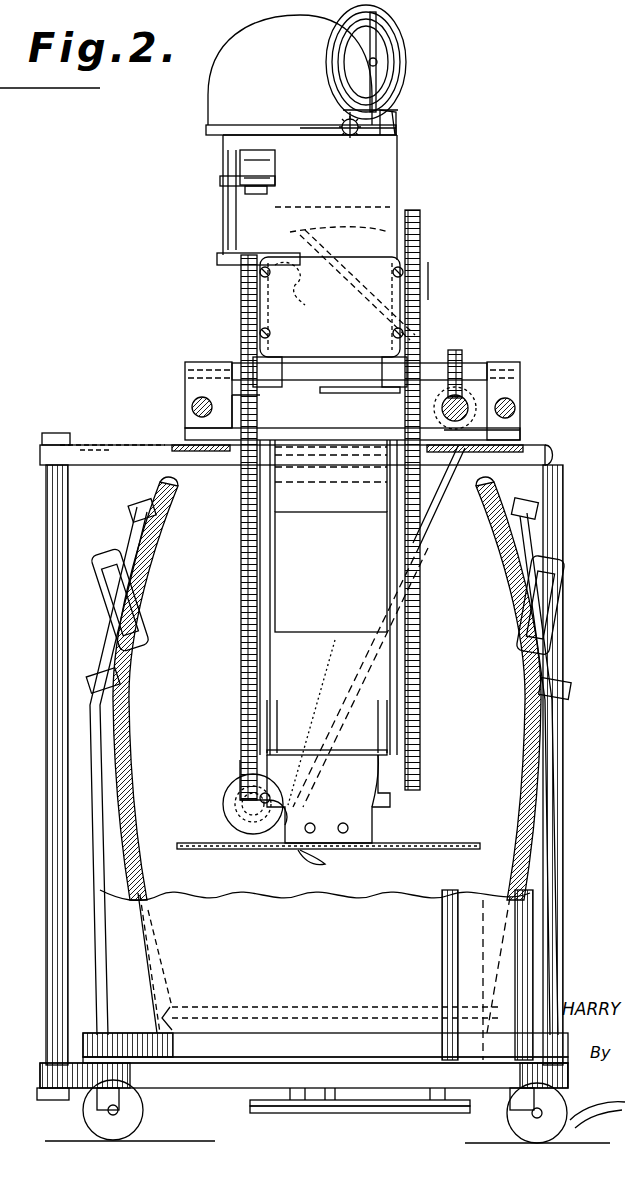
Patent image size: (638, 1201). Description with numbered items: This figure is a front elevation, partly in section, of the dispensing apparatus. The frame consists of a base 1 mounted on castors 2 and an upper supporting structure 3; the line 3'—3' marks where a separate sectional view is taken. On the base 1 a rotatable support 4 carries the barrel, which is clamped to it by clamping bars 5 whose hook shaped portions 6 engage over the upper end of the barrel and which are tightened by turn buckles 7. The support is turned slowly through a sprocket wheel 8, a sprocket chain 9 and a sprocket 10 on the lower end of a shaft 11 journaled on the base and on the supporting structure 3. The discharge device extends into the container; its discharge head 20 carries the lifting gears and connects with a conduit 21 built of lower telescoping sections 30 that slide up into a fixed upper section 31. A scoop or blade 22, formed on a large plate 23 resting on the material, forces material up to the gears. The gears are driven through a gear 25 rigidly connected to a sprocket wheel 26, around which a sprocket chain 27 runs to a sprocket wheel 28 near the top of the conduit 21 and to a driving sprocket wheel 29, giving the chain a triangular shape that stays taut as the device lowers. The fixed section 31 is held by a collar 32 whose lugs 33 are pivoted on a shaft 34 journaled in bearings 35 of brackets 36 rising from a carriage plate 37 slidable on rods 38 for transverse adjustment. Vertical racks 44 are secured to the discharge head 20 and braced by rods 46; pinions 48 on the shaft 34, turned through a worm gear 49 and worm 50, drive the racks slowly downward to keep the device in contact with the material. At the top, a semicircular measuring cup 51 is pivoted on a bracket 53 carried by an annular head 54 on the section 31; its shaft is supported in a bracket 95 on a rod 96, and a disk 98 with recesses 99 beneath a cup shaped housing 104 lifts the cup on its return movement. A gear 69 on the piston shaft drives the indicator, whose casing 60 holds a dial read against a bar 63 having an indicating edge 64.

The base 1 is at (222, 1080).
The castors 2 is at (92, 1112).
The upper supporting structure 3 is at (301, 740).
The section line 3' is at (342, 286).
The rotatable support 4 is at (195, 1045).
The clamping bars 5 is at (563, 722).
The hook shaped portions 6 is at (515, 492).
The turn buckles 7 is at (557, 600).
The sprocket wheel 8 is at (312, 1108).
The sprocket chain 9 is at (400, 1110).
The sprocket 10 is at (438, 1108).
The shaft 11 is at (450, 976).
The discharge head 20 is at (373, 792).
The conduit 21 is at (375, 722).
The scoop 22 is at (304, 852).
The plate 23 is at (240, 850).
The gear 25 is at (225, 793).
The sprocket wheel 26 is at (311, 722).
The sprocket chain 27 is at (430, 527).
The sprocket wheel 28 is at (337, 292).
The driving sprocket wheel 29 is at (466, 400).
The telescoping sections 30 is at (331, 536).
The upper section 31 is at (310, 197).
The band 32 is at (331, 299).
The lugs 33 is at (282, 364).
The shaft 34 is at (340, 375).
The bearings 35 is at (185, 366).
The brackets 36 is at (512, 414).
The plate 37 is at (195, 433).
The rods 38 is at (192, 404).
The vertical racks 44 is at (240, 322).
The rods 46 is at (268, 583).
The pinions 48 is at (258, 397).
The worm gear 49 is at (455, 350).
The worm 50 is at (445, 402).
The cup 51 is at (290, 70).
The bracket 53 is at (210, 137).
The annular head 54 is at (393, 133).
The casing 60 is at (403, 33).
The bar 63 is at (377, 88).
The indicating edge 64 is at (360, 90).
The gear 69 is at (347, 133).
The bracket 95 is at (222, 183).
The rod 96 is at (225, 226).
The disk 98 is at (280, 185).
The recesses 99 is at (248, 180).
The cup shaped housing 104 is at (240, 163).